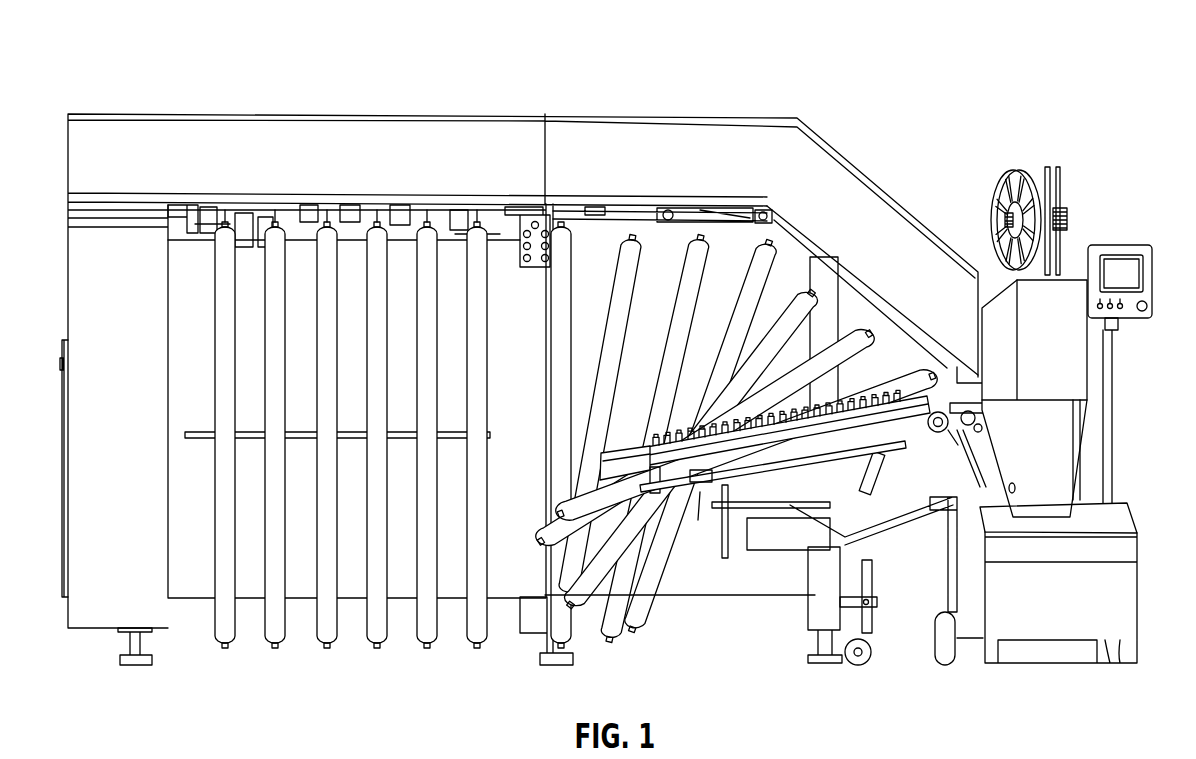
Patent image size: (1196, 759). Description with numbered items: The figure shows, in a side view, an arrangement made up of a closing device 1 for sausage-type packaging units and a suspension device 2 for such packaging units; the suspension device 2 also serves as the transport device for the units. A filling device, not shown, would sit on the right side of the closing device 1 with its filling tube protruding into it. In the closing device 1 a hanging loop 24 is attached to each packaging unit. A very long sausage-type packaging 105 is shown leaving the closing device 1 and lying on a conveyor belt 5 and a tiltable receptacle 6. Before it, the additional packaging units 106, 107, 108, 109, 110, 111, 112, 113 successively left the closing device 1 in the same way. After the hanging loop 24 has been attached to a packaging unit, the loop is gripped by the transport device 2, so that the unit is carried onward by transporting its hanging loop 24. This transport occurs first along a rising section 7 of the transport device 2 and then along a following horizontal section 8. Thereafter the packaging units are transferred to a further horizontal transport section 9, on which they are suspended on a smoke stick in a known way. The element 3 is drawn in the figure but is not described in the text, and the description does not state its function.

The closing device 1 is at (1068, 260).
The suspension device 2 is at (470, 118).
The transfer bracket 3 is at (975, 392).
The conveyor belt 5 is at (938, 432).
The tiltable receptacle 6 is at (778, 462).
The rising section 7 is at (948, 372).
The horizontal section 8 is at (618, 225).
The further horizontal transport section 9 is at (345, 215).
The hanging loop 24 is at (830, 267).
The sausage-type packaging 105 is at (705, 482).
The packaging unit 106 is at (905, 358).
The packaging unit 107 is at (877, 335).
The packaging unit 108 is at (797, 288).
The packaging unit 109 is at (752, 318).
The packaging unit 110 is at (688, 310).
The packaging unit 111 is at (622, 298).
The packaging unit 112 is at (565, 370).
The packaging unit 113 is at (485, 378).